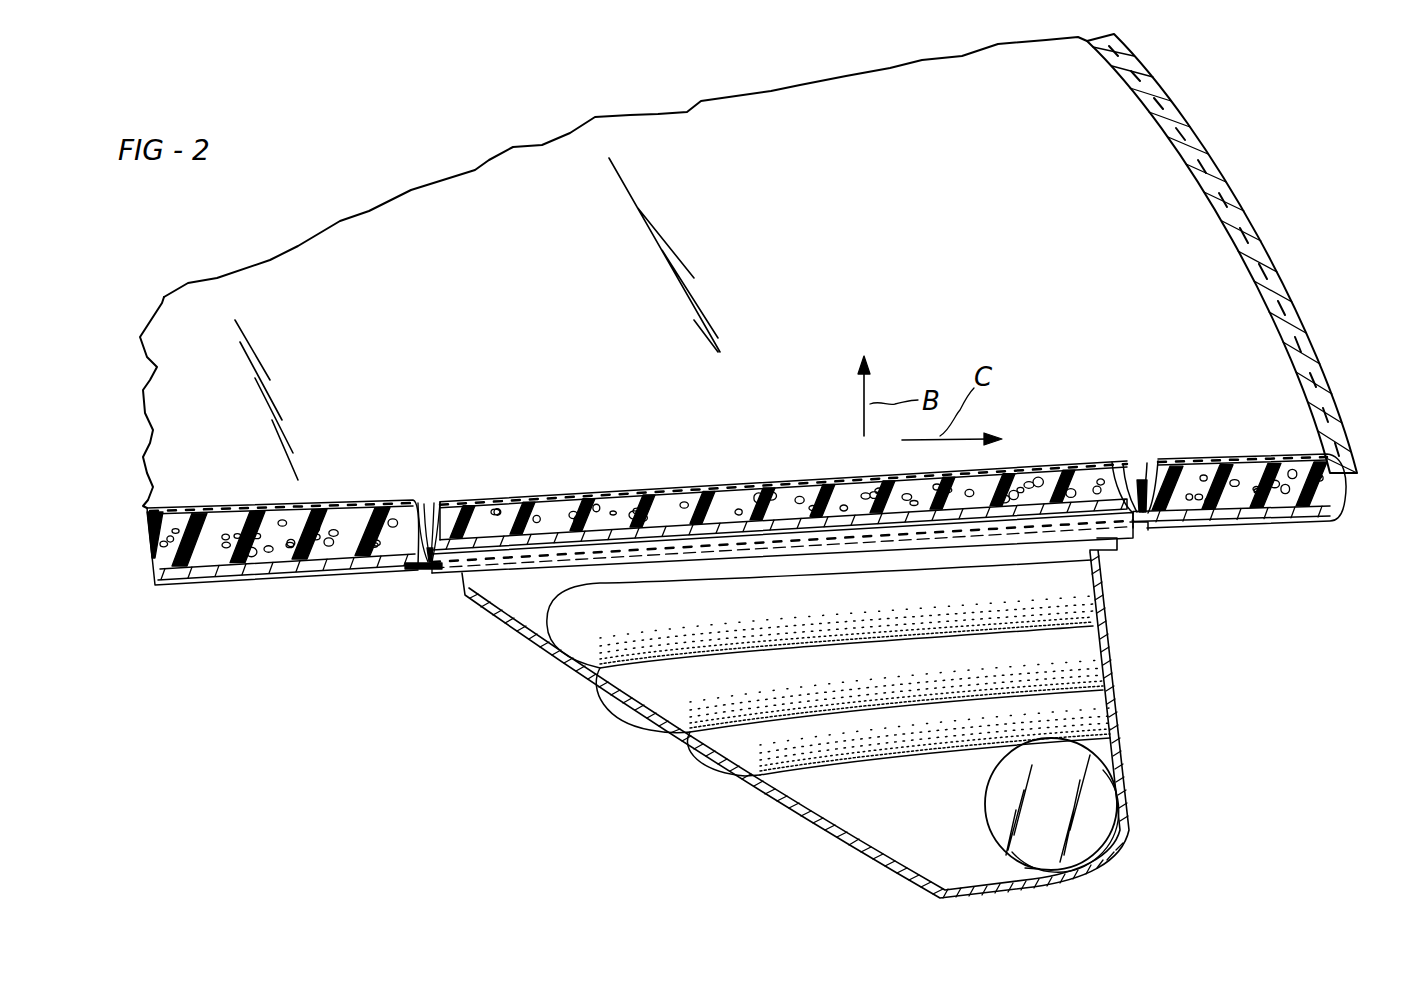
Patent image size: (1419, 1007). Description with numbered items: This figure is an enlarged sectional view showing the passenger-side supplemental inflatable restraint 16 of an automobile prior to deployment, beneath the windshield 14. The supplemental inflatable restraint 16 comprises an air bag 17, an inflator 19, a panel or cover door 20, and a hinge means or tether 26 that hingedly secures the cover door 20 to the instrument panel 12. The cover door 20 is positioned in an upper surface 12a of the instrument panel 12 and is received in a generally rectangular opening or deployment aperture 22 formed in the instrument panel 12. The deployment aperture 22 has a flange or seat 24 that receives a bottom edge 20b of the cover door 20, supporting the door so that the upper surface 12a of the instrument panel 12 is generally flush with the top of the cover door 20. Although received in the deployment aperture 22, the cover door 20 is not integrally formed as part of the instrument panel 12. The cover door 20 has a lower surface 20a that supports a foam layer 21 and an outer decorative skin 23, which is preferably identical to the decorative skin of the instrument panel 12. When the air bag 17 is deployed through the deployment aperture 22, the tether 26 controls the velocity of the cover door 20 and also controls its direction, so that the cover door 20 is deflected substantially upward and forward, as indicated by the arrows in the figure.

The instrument panel 12 is at (1150, 461).
The upper surface 12a is at (1248, 458).
The windshield 14 is at (475, 170).
The supplemental inflatable restraint 16 is at (1120, 547).
The air bag 17 is at (584, 645).
The inflator 19 is at (985, 803).
The cover door 20 is at (1130, 461).
The lower surface 20a is at (560, 493).
The bottom edge 20b is at (450, 501).
The foam layer 21 is at (745, 489).
The deployment aperture 22 is at (419, 503).
The outer decorative skin 23 is at (630, 494).
The flange or seat 24 is at (420, 567).
The tether 26 is at (1052, 464).